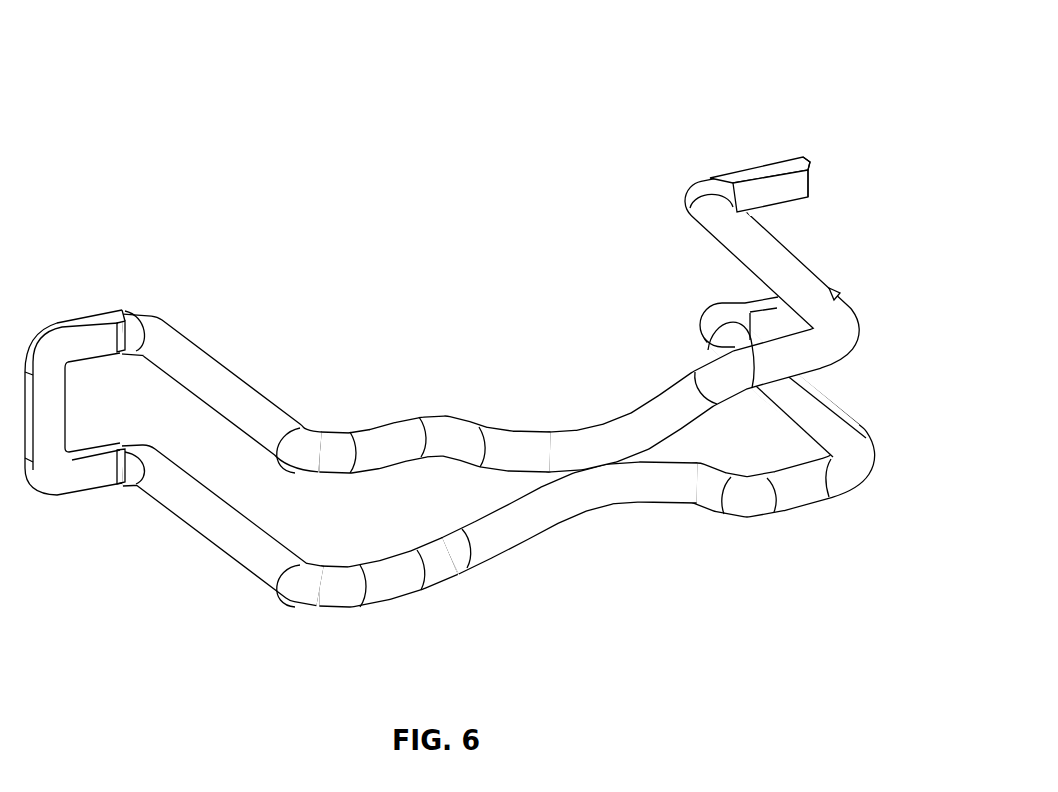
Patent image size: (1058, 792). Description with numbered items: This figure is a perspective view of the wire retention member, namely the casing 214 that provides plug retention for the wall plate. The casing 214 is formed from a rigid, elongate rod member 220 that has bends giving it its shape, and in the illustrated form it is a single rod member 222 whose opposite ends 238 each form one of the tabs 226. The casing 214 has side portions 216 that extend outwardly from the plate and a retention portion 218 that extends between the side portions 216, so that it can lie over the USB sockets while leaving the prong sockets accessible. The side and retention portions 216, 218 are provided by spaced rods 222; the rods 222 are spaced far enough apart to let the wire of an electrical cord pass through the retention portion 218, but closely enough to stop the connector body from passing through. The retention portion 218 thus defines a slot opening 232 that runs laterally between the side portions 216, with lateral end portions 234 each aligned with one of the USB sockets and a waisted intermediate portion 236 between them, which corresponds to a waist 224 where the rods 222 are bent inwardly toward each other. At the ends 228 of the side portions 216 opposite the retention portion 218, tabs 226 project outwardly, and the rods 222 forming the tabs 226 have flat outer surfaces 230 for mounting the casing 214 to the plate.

The casing 214 is at (220, 92).
The side portions 216 is at (210, 523).
The retention portion 218 is at (390, 603).
The rod member 220 is at (230, 363).
The rods 222 is at (797, 280).
The waist 224 is at (608, 417).
The tabs 226 is at (92, 313).
The ends 228 is at (838, 290).
The flat outer surfaces 230 is at (73, 485).
The slot opening 232 is at (450, 475).
The lateral end portions 234 is at (390, 485).
The waisted intermediate portion 236 is at (585, 482).
The opposite ends 238 is at (163, 313).